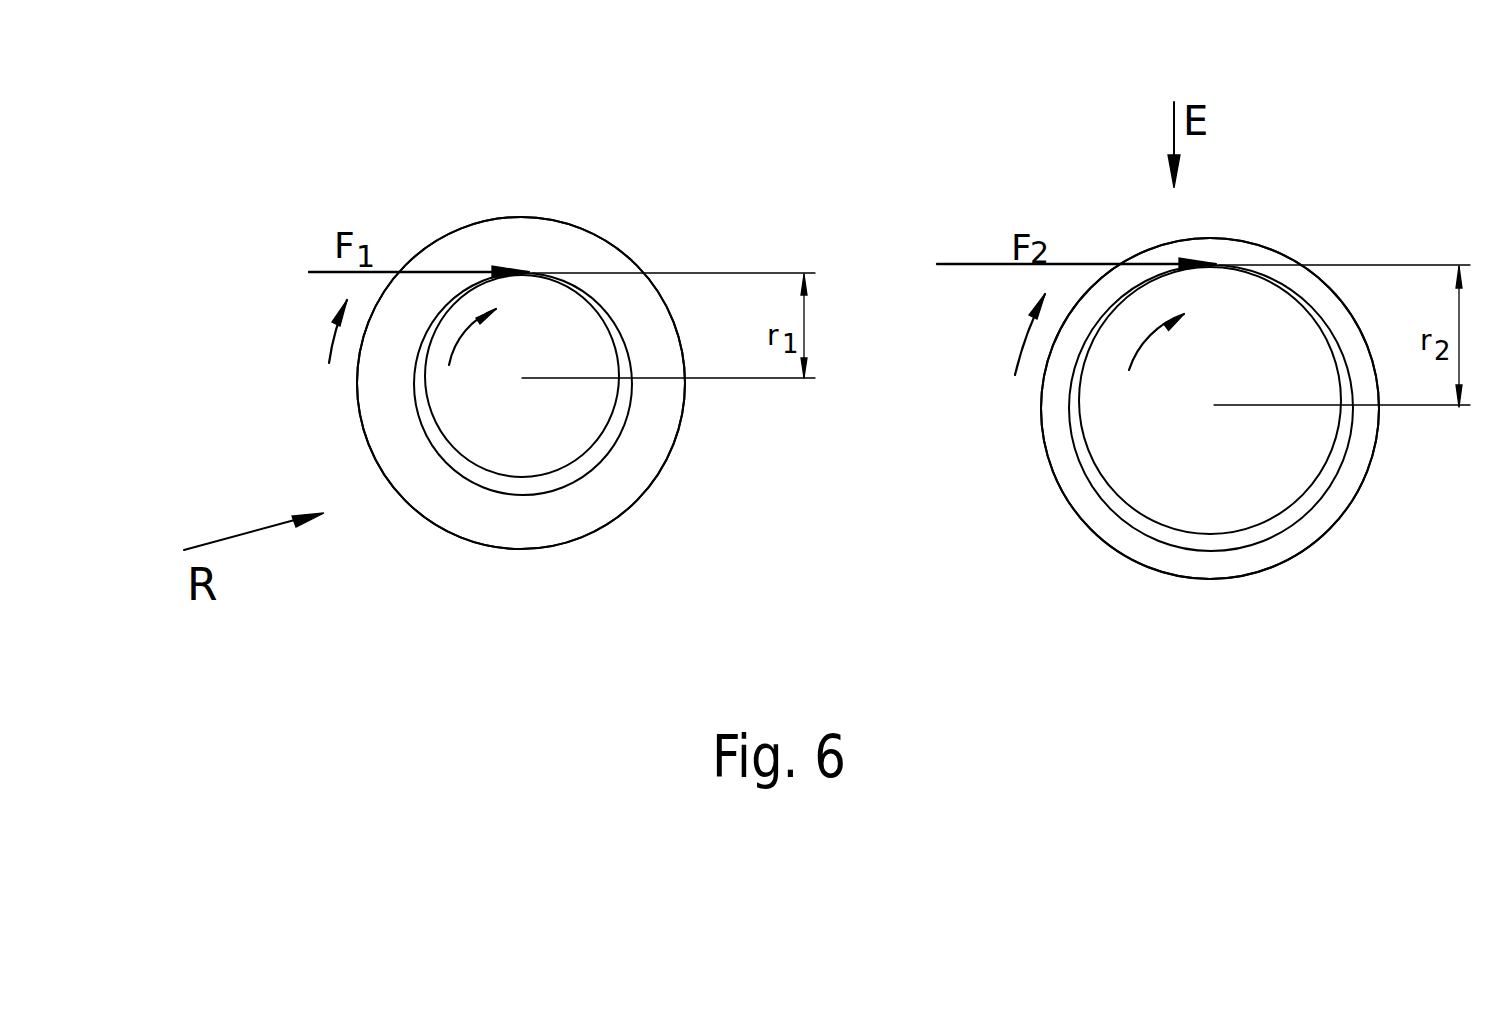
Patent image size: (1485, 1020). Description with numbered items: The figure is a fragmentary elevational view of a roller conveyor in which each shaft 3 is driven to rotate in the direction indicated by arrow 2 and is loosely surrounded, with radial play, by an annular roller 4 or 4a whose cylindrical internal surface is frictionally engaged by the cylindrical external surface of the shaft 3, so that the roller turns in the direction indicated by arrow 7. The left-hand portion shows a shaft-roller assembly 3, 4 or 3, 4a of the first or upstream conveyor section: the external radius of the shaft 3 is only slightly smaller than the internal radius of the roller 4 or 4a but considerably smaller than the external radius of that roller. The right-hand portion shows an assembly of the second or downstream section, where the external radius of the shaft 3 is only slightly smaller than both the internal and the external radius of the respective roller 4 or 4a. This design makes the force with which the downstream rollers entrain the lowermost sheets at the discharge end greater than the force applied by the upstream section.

The arrows indicating shaft rotation direction 2 is at (816, 348).
The shaft 3 is at (575, 418).
The roller 4 is at (587, 533).
The roller 4a is at (868, 398).
The arrows indicating roller rotation direction 7 is at (673, 334).